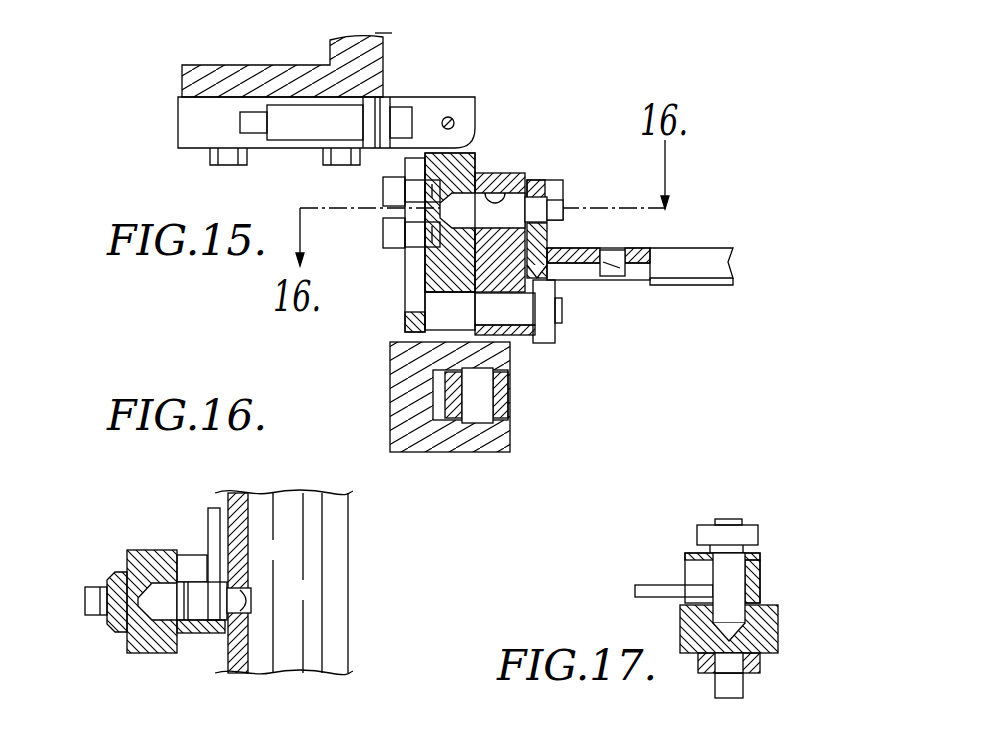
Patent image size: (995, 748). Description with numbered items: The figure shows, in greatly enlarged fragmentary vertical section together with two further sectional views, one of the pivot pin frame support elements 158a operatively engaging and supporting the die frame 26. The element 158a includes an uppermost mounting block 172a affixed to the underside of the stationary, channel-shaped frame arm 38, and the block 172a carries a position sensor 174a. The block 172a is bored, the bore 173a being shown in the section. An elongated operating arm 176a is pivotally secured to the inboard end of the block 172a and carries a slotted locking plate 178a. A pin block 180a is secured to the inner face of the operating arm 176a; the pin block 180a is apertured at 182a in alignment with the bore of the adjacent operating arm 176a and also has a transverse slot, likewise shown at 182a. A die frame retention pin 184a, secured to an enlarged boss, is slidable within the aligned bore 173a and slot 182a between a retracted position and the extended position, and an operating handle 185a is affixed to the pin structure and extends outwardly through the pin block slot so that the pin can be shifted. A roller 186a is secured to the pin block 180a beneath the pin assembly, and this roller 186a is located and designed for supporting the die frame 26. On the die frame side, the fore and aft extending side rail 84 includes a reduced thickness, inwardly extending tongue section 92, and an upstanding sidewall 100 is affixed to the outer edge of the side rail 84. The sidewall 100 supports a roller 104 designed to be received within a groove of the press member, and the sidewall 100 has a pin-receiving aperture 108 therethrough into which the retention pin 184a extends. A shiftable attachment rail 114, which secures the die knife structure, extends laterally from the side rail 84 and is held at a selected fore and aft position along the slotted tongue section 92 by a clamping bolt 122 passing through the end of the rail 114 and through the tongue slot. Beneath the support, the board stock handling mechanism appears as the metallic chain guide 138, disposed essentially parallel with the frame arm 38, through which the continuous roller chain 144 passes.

In FIG. 15, the die frame 26 is at (697, 247).
In FIG. 16, the die frame 26 is at (352, 578).
In FIG. 15, the frame arm 38 is at (252, 72).
In FIG. 15, the side rail 84 is at (558, 290).
In FIG. 16, the side rail 84 is at (338, 610).
In FIG. 15, the tongue section 92 is at (640, 258).
In FIG. 15, the sidewall 100 is at (540, 245).
In FIG. 16, the sidewall 100 is at (217, 490).
In FIG. 15, the roller 104 is at (555, 187).
In FIG. 15, the pin-receiving aperture 108 is at (543, 215).
In FIG. 16, the pin-receiving aperture 108 is at (250, 600).
In FIG. 15, the attachment rail 114 is at (720, 260).
In FIG. 15, the clamping bolt 122 is at (615, 267).
In FIG. 15, the chain guide 138 is at (421, 452).
In FIG. 15, the roller chain 144 is at (508, 392).
In FIG. 15, the element 158a is at (480, 90).
In FIG. 16, the element 158a is at (135, 540).
In FIG. 17, the element 158a is at (692, 658).
In FIG. 15, the mounting block 172a is at (187, 115).
In FIG. 15, the bore 173a is at (460, 198).
In FIG. 16, the bore 173a is at (153, 590).
In FIG. 17, the bore 173a is at (720, 633).
In FIG. 15, the position sensor 174a is at (307, 130).
In FIG. 15, the operating arm 176a is at (433, 262).
In FIG. 16, the operating arm 176a is at (150, 650).
In FIG. 17, the operating arm 176a is at (770, 637).
In FIG. 15, the locking plate 178a is at (408, 318).
In FIG. 16, the locking plate 178a is at (118, 633).
In FIG. 17, the locking plate 178a is at (755, 667).
In FIG. 15, the pin block 180a is at (515, 340).
In FIG. 16, the pin block 180a is at (193, 637).
In FIG. 17, the pin block 180a is at (758, 592).
In FIG. 15, the aperture 182a is at (490, 198).
In FIG. 16, the aperture 182a is at (200, 555).
In FIG. 17, the aperture 182a is at (688, 578).
In FIG. 15, the die frame retention pin 184a is at (538, 213).
In FIG. 16, the die frame retention pin 184a is at (243, 606).
In FIG. 17, the die frame retention pin 184a is at (730, 563).
In FIG. 16, the operating handle 185a is at (212, 507).
In FIG. 17, the operating handle 185a is at (637, 595).
In FIG. 15, the roller 186a is at (552, 332).
In FIG. 17, the roller 186a is at (703, 528).